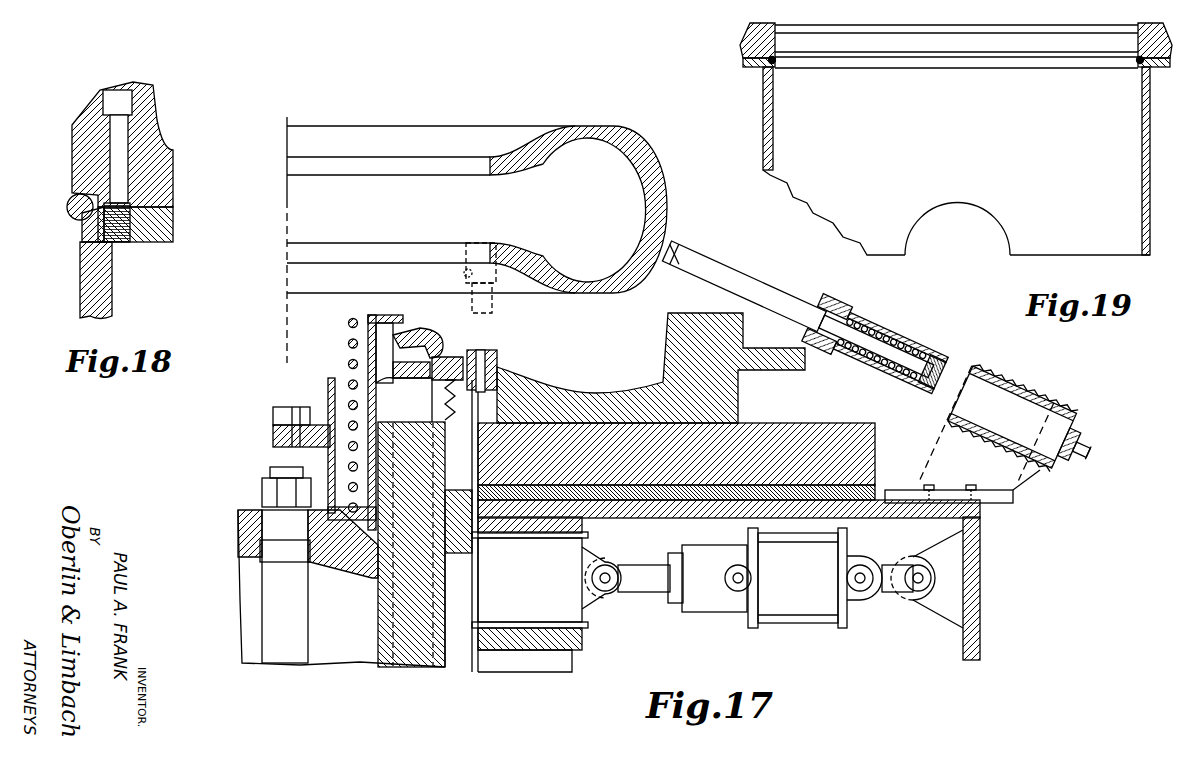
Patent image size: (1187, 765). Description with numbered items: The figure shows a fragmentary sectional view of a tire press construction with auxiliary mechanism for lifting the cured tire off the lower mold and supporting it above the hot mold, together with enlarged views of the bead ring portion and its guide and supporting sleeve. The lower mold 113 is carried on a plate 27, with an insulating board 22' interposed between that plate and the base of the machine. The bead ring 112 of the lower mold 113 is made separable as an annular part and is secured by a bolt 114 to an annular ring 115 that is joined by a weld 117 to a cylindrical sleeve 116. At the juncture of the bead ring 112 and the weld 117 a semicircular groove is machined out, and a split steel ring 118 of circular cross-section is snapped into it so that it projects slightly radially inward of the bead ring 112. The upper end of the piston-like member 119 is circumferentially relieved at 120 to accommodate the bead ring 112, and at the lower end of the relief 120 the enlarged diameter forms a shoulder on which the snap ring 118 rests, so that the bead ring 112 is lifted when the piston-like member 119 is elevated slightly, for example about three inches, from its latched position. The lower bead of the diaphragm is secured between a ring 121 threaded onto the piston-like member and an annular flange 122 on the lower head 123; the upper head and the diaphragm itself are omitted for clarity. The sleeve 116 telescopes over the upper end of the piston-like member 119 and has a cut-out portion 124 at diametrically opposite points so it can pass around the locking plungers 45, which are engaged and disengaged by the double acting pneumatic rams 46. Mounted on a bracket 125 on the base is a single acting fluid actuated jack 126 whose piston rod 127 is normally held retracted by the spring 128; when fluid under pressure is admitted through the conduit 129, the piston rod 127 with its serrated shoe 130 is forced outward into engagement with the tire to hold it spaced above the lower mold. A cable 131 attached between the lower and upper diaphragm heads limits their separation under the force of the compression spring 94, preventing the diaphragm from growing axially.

In FIG. 17, the plate 27 is at (877, 447).
In FIG. 17, the insulating board 22' is at (944, 478).
In FIG. 17, the locking plungers 45 is at (546, 594).
In FIG. 17, the double acting pneumatic rams 46 is at (815, 578).
In FIG. 17, the compression spring 94 is at (351, 318).
In FIG. 18, the bead ring 112 is at (150, 128).
In FIG. 19, the bead ring 112 is at (747, 41).
In FIG. 17, the bead ring 112 is at (492, 365).
In FIG. 17, the lower mold 113 is at (667, 340).
In FIG. 18, the bolt 114 is at (118, 178).
In FIG. 18, the annular ring 115 is at (173, 228).
In FIG. 19, the annular ring 115 is at (752, 71).
In FIG. 18, the cylindrical sleeve 116 is at (110, 282).
In FIG. 19, the cylindrical sleeve 116 is at (774, 136).
In FIG. 18, the weld 117 is at (82, 238).
In FIG. 18, the split steel ring 118 is at (70, 214).
In FIG. 19, the split steel ring 118 is at (774, 64).
In FIG. 17, the piston-like member 119 is at (368, 578).
In FIG. 17, the circumferential relief 120 is at (455, 357).
In FIG. 17, the ring 121 is at (415, 392).
In FIG. 17, the annular flange 122 is at (428, 330).
In FIG. 17, the lower head 123 is at (305, 435).
In FIG. 19, the cut-out portion 124 is at (982, 204).
In FIG. 17, the bracket 125 is at (1007, 473).
In FIG. 17, the single acting fluid actuated jack 126 is at (998, 446).
In FIG. 17, the piston rod 127 is at (798, 311).
In FIG. 17, the spring 128 is at (876, 346).
In FIG. 17, the conduit 129 is at (1075, 447).
In FIG. 17, the serrated shoe 130 is at (678, 236).
In FIG. 17, the cable 131 is at (300, 393).